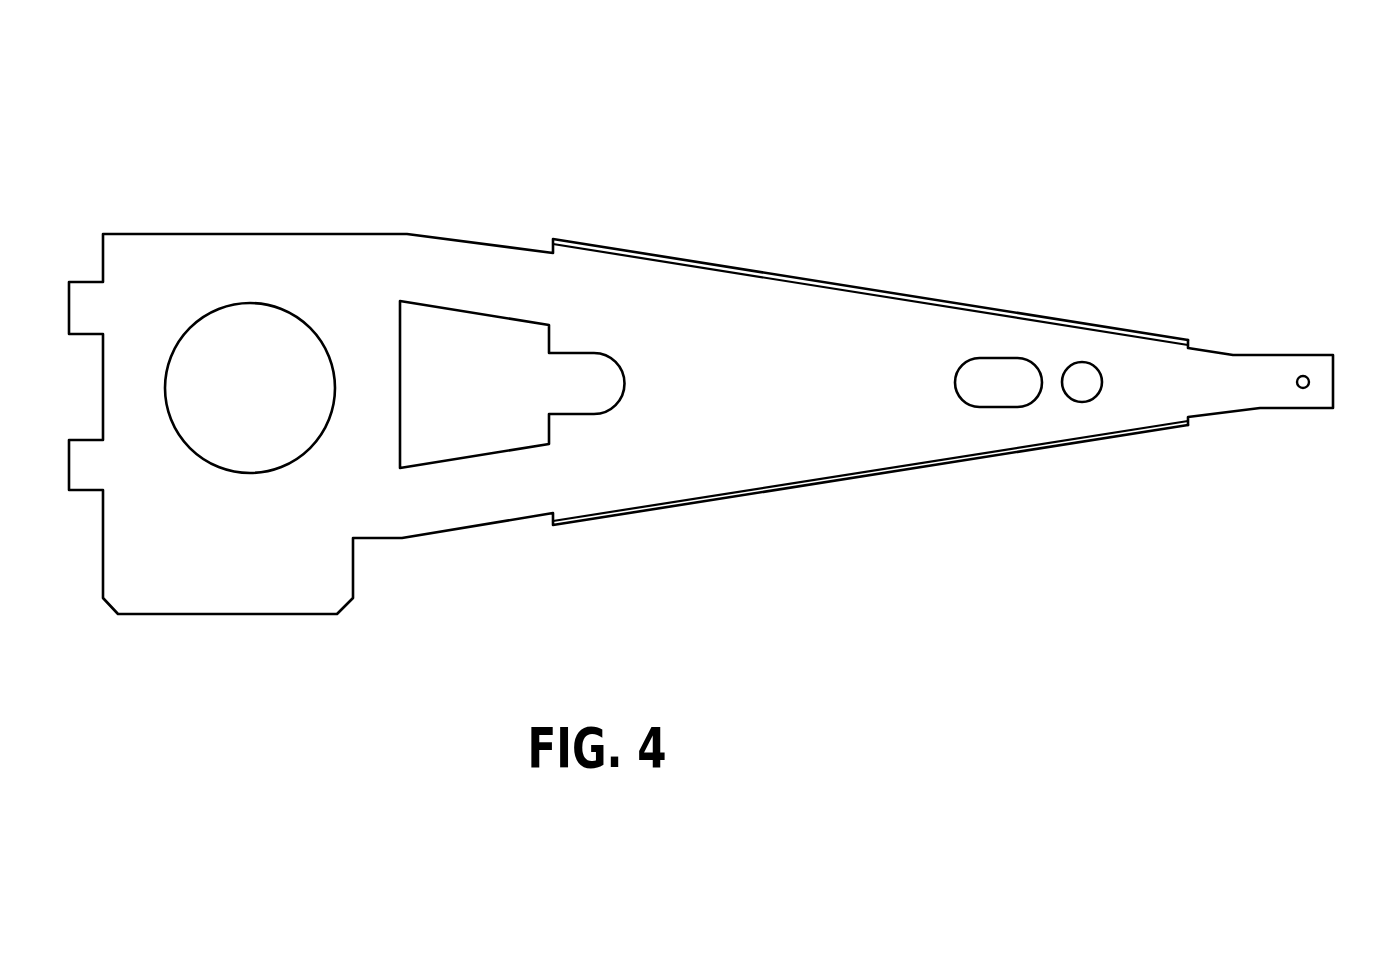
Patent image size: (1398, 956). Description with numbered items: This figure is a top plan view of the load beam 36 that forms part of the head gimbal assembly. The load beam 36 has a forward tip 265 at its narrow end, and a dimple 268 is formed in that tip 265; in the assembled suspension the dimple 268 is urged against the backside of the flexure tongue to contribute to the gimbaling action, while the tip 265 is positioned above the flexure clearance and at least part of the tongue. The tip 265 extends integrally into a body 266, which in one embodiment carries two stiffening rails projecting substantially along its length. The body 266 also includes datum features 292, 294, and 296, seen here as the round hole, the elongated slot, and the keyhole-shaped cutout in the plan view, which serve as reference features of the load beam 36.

The load beam 36 is at (518, 97).
The body 266 is at (834, 396).
The datum feature 296 is at (578, 352).
The datum feature 294 is at (1002, 388).
The datum feature 292 is at (1087, 383).
The forward tip 265 is at (1232, 367).
The dimple 268 is at (1307, 375).